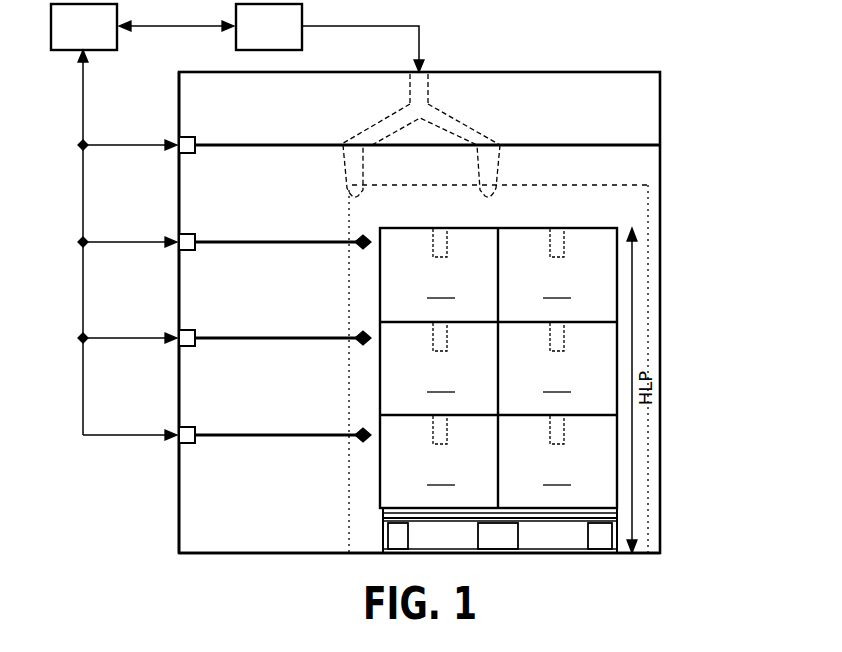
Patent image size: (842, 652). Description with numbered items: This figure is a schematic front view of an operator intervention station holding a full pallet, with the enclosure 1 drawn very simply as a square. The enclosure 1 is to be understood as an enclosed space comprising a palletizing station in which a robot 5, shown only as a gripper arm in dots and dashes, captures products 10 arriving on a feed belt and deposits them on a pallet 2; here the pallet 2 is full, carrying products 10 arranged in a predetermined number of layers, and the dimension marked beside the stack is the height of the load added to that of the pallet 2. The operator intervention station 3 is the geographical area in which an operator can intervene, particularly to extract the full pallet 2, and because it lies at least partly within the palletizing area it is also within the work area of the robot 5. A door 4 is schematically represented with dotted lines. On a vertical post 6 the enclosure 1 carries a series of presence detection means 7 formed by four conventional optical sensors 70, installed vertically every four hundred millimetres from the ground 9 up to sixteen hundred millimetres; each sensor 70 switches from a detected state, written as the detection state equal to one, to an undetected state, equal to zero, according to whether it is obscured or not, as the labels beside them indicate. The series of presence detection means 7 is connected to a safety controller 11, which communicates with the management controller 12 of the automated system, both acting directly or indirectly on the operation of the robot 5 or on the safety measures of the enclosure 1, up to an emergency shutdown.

The enclosure 1 is at (680, 100).
The pallet 2 is at (622, 525).
The operator intervention station 3 is at (598, 473).
The door 4 is at (345, 312).
The robot 5 is at (434, 135).
The vertical post 6 is at (178, 110).
The series of presence detection means 7 is at (149, 128).
The ground 9 is at (292, 553).
The products 10 is at (499, 357).
The safety controller 11 is at (84, 27).
The management controller 12 is at (269, 27).
The optical sensors 70 is at (197, 151).